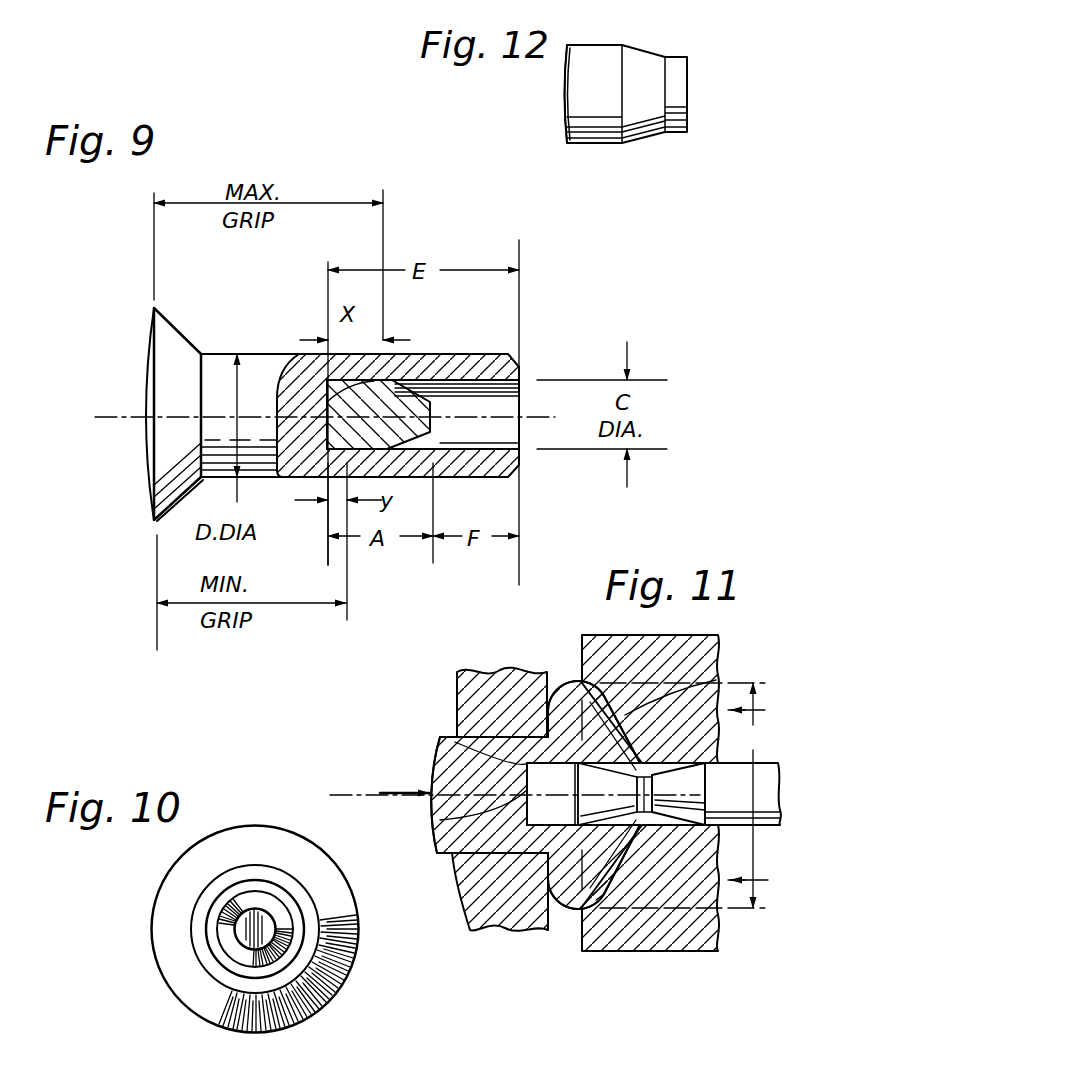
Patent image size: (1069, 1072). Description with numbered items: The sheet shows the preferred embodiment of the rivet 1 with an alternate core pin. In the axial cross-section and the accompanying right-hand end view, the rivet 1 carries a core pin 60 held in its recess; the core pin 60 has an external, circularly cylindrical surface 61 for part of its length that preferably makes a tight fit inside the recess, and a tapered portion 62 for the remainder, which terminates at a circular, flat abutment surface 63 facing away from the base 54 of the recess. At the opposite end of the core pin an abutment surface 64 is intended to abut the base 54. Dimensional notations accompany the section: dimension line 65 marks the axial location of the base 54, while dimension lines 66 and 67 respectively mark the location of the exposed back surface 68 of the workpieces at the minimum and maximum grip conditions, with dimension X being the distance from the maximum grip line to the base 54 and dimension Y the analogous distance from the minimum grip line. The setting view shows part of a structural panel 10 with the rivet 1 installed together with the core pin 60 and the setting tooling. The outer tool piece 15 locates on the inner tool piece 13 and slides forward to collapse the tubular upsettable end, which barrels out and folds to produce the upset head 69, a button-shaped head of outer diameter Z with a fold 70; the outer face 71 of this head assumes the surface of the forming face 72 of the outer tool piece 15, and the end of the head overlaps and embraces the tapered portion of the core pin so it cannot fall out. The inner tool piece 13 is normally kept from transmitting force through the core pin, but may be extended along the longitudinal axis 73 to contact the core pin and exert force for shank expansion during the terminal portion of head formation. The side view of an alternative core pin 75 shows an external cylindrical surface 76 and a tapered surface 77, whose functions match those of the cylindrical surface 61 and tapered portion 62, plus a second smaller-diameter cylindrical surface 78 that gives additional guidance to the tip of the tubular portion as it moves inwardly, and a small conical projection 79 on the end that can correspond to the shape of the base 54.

In FIG. 9, the rivet 1 is at (321, 430).
In FIG. 10, the rivet 1 is at (219, 941).
In FIG. 11, the rivet 1 is at (560, 804).
In FIG. 11, the structural panel 10 is at (457, 673).
In FIG. 11, the inner tool piece 13 is at (758, 826).
In FIG. 11, the outer tool piece 15 is at (700, 636).
In FIG. 9, the base 54 is at (386, 362).
In FIG. 11, the base 54 is at (441, 835).
In FIG. 9, the core pin 60 is at (447, 407).
In FIG. 11, the core pin 60 is at (506, 804).
In FIG. 11, the cylindrical surface 61 is at (560, 793).
In FIG. 11, the tapered portion 62 is at (612, 796).
In FIG. 9, the abutment surface 63 is at (437, 424).
In FIG. 9, the abutment surface 64 is at (327, 402).
In FIG. 11, the abutment surface 64 is at (447, 805).
In FIG. 9, the dimension line 65 is at (328, 558).
In FIG. 9, the dimension line 66 is at (347, 585).
In FIG. 9, the dimension line 67 is at (384, 237).
In FIG. 11, the exposed back surface 68 is at (547, 672).
In FIG. 10, the upset head 69 is at (204, 1022).
In FIG. 11, the upset head 69 is at (568, 910).
In FIG. 11, the fold 70 is at (574, 681).
In FIG. 11, the outer face 71 is at (702, 688).
In FIG. 11, the forming face 72 is at (583, 925).
In FIG. 11, the longitudinal axis 73 is at (390, 797).
In FIG. 12, the core pin 75 is at (619, 76).
In FIG. 12, the cylindrical surface 76 is at (603, 102).
In FIG. 12, the tapered surface 77 is at (655, 100).
In FIG. 12, the second cylindrical surface 78 is at (677, 88).
In FIG. 12, the conical projection 79 is at (561, 96).